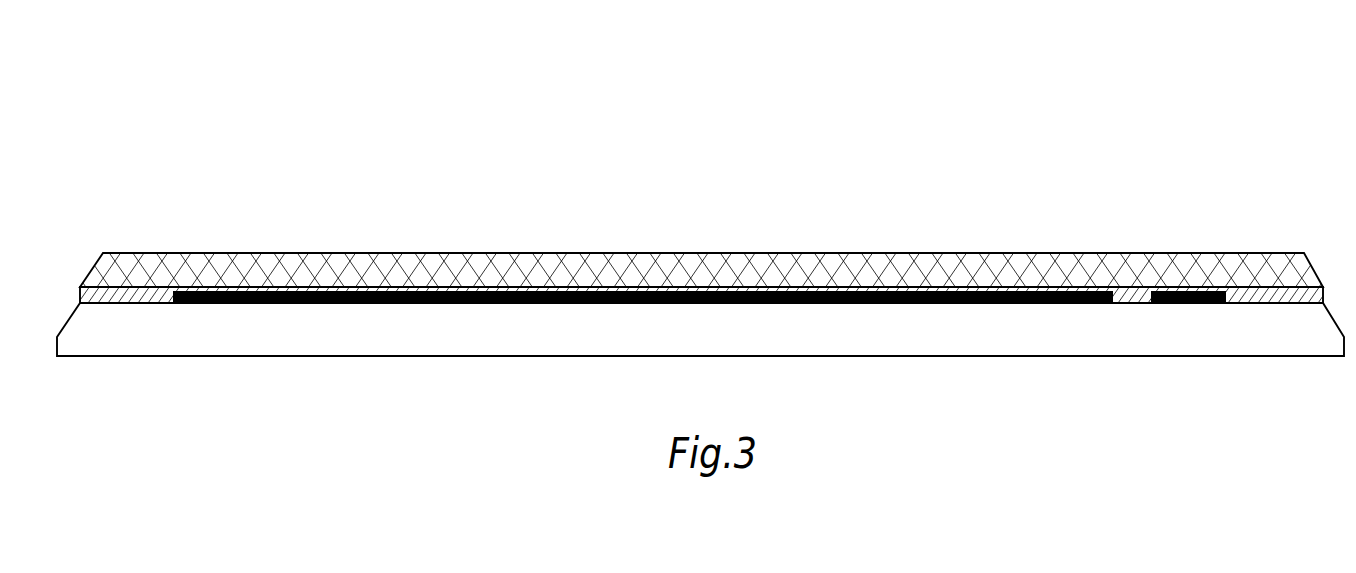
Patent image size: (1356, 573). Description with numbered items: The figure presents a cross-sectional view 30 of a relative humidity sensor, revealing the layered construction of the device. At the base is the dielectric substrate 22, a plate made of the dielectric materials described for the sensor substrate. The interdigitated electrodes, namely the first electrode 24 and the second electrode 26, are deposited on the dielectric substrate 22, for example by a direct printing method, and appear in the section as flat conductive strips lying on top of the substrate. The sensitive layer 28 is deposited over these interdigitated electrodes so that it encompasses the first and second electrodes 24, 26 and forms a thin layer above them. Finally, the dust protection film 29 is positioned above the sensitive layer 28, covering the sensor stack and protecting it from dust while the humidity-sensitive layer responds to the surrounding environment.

The dielectric substrate 22 is at (853, 340).
The first electrode 24 is at (1198, 292).
The second electrode 26 is at (323, 290).
The sensitive layer 28 is at (133, 297).
The dust protection film 29 is at (708, 260).
The cross-sectional view 30 is at (1284, 79).